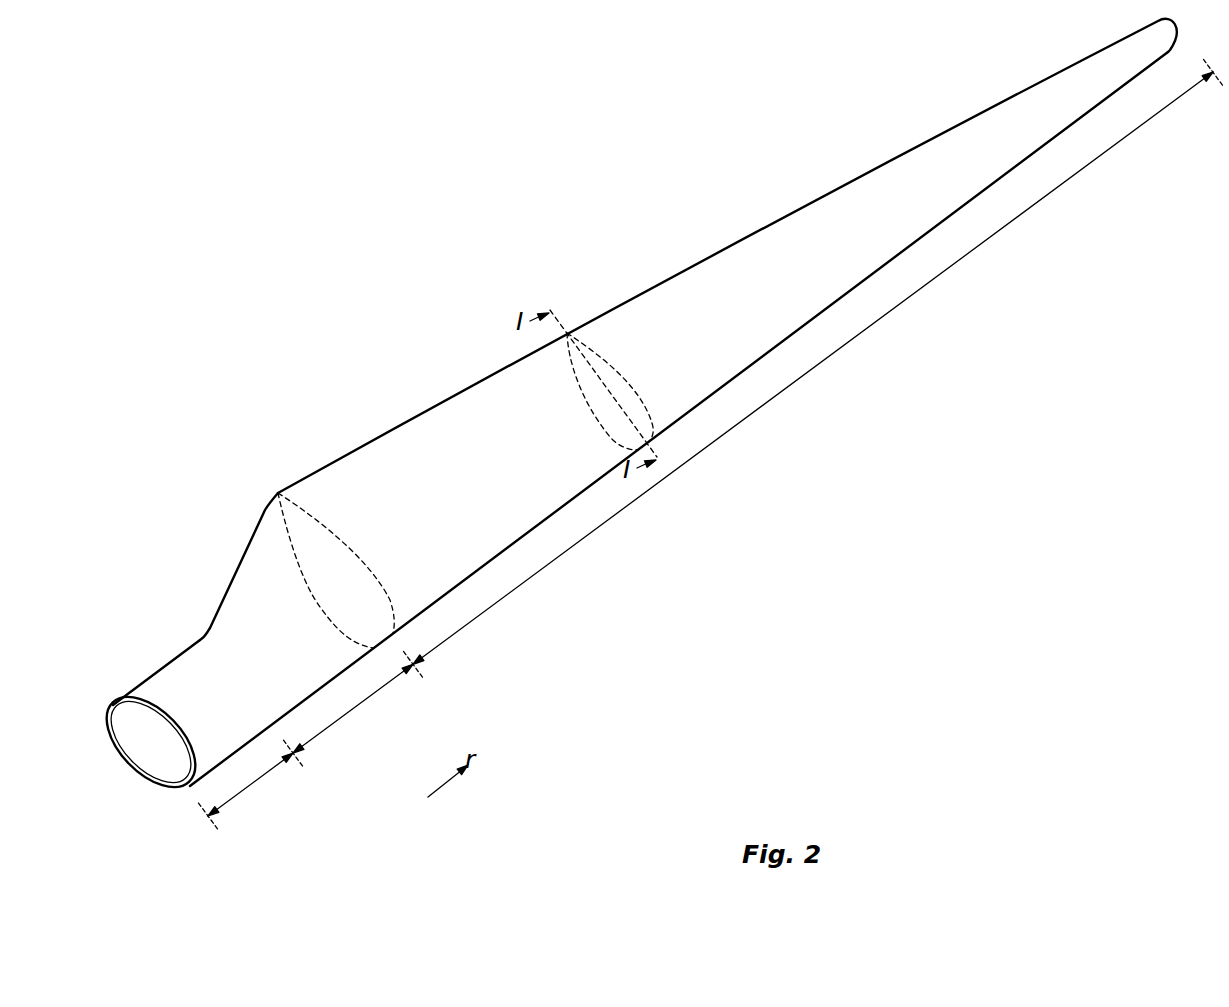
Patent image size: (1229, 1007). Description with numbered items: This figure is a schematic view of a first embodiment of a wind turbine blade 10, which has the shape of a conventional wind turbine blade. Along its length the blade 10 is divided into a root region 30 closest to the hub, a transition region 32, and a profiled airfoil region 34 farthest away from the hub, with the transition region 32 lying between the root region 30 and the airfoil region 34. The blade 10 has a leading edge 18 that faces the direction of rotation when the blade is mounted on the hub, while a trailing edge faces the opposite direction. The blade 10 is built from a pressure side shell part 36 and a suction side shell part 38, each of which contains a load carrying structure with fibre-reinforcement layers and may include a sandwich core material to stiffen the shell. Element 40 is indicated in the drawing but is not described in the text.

The wind turbine blade 10 is at (452, 262).
The leading edge 18 is at (852, 288).
The root region 30 is at (255, 782).
The transition region 32 is at (358, 703).
The airfoil region 34 is at (735, 428).
The pressure side shell part 36 is at (130, 702).
The suction side shell part 38 is at (109, 712).
The shoulder 40 is at (278, 493).